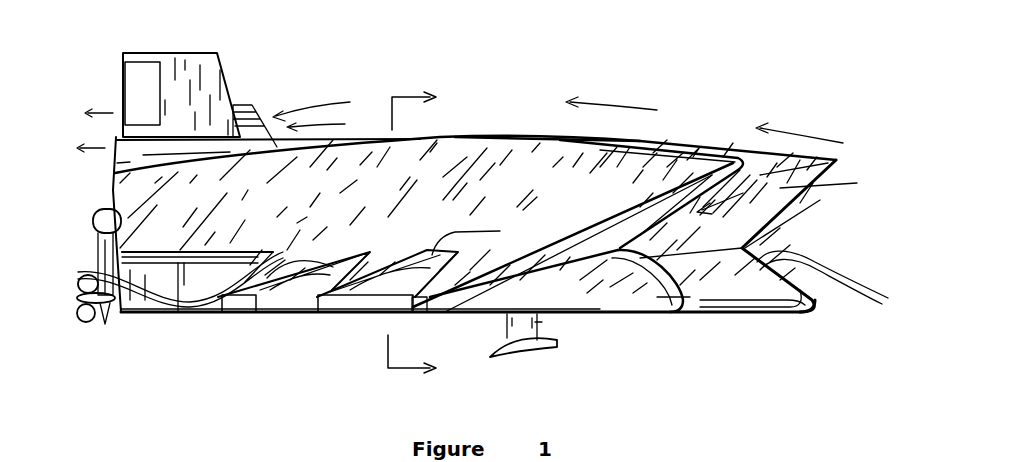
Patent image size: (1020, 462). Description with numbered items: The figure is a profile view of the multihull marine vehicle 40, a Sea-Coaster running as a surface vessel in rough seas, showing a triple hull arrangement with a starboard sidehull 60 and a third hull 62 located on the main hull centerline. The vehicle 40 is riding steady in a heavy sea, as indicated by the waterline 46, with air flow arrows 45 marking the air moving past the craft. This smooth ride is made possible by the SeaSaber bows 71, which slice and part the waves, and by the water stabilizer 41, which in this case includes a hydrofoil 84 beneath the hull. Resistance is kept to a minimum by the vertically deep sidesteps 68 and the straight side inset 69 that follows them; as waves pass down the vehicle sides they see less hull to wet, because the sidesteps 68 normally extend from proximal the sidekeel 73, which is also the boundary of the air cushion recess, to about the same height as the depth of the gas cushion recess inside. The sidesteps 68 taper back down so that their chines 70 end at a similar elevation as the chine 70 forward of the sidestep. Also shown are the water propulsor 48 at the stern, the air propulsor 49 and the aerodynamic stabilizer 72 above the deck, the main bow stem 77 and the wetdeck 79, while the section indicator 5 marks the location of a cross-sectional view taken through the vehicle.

The multihull marine vehicle 40 is at (501, 212).
The aerodynamic stabilizer 72 is at (175, 78).
The air propulsor 49 is at (243, 110).
The air flow arrows 45 is at (320, 100).
The section line 5 is at (412, 223).
The starboard sidehull 60 is at (497, 172).
The water propulsor 48 is at (92, 218).
The straight side inset 69 is at (205, 280).
The sidestep 68 is at (338, 258).
The chine 70 is at (392, 268).
The wetdeck 79 is at (760, 166).
The third hull 62 is at (806, 157).
The main bow stem 77 is at (640, 207).
The waterline 46 is at (822, 256).
The SeaSaber bows 71 is at (650, 300).
The sidekeel 73 is at (403, 315).
The water stabilizer 41 is at (542, 322).
The hydrofoil 84 is at (492, 355).